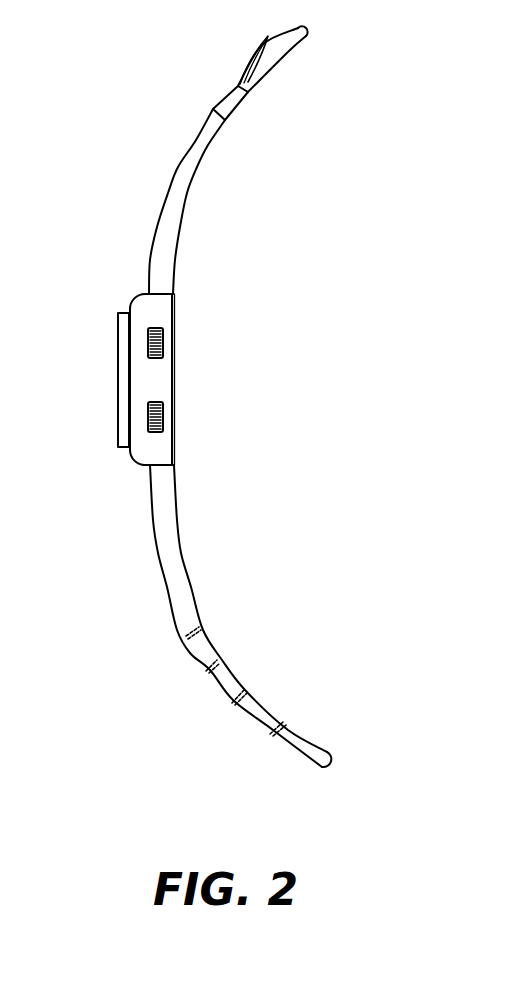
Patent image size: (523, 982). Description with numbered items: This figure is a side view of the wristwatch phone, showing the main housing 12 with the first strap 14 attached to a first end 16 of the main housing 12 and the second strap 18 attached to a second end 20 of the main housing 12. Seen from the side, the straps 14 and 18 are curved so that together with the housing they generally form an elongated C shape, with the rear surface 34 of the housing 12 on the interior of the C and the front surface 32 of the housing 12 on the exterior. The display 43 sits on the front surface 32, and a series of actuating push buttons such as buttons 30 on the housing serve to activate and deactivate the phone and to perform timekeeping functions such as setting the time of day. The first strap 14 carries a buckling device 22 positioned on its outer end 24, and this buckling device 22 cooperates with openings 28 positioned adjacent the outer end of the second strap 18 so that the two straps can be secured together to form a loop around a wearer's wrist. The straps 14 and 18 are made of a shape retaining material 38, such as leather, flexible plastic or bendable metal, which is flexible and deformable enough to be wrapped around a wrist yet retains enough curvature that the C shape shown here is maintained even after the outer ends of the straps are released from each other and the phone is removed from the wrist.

The main housing 12 is at (118, 318).
The first strap 14 is at (172, 227).
The first end 16 is at (148, 293).
The second strap 18 is at (178, 543).
The second end 20 is at (148, 467).
The buckling device 22 is at (274, 56).
The outer end 24 is at (213, 110).
The openings 28 is at (188, 635).
The buttons 30 is at (163, 413).
The front surface 32 is at (130, 457).
The rear surface 34 is at (176, 370).
The shape retaining material 38 is at (181, 157).
The display 43 is at (118, 386).